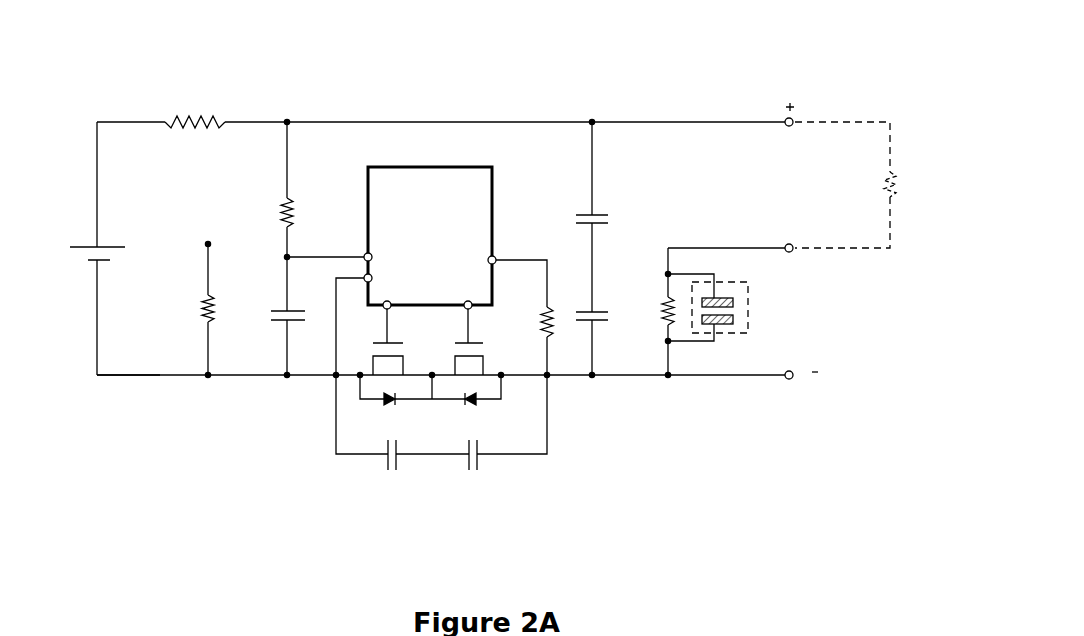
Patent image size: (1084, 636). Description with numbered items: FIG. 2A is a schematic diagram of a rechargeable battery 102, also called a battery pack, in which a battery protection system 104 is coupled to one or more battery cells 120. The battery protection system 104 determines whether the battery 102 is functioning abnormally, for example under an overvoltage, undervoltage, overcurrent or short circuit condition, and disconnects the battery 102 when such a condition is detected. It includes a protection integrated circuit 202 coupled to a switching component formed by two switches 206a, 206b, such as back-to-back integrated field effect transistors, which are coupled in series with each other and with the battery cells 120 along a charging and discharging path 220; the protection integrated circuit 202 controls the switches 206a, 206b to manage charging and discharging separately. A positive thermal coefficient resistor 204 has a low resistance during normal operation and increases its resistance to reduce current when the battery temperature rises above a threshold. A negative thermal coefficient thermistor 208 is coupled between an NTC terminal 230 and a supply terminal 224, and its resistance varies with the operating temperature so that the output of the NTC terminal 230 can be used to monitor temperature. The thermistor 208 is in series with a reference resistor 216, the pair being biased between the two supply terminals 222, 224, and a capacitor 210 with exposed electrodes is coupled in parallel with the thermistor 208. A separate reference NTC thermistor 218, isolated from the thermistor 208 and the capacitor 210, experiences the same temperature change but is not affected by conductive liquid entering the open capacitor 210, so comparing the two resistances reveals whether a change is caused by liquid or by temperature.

The rechargeable battery 102 is at (738, 62).
The battery protection system 104 is at (807, 492).
The battery cells 120 is at (93, 246).
The protection integrated circuit 202 is at (430, 238).
The positive thermal coefficient resistor 204 is at (214, 118).
The switch 206a is at (398, 405).
The switch 206b is at (486, 405).
The negative thermal coefficient thermistor 208 is at (662, 312).
The capacitor 210 is at (730, 310).
The reference resistor 216 is at (897, 187).
The reference NTC thermistor 218 is at (198, 294).
The charging and discharging path 220 is at (141, 377).
The supply terminal 222 is at (794, 126).
The supply terminal 224 is at (794, 380).
The NTC terminal 230 is at (794, 244).